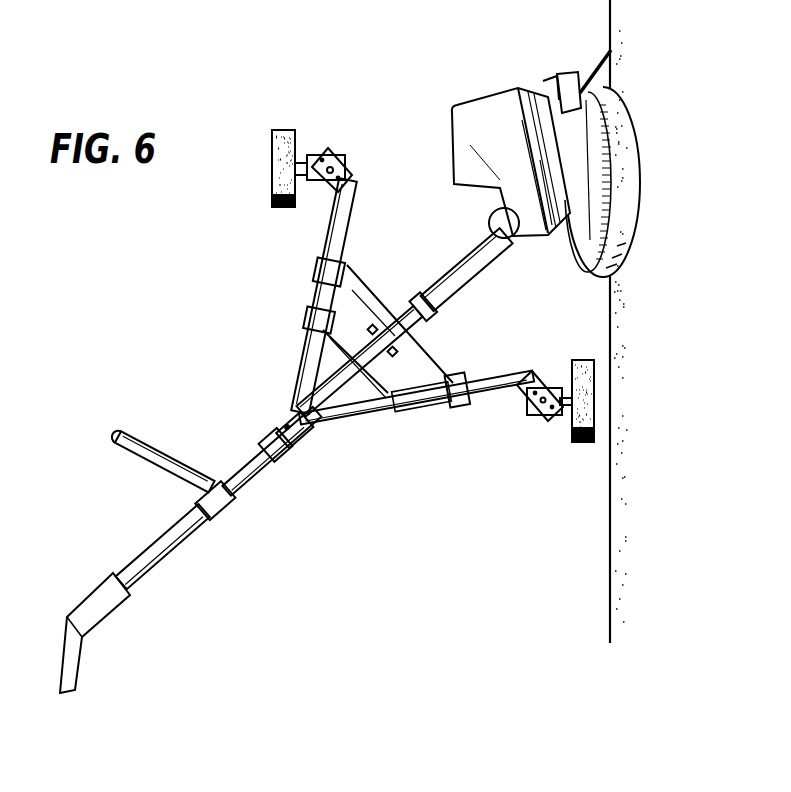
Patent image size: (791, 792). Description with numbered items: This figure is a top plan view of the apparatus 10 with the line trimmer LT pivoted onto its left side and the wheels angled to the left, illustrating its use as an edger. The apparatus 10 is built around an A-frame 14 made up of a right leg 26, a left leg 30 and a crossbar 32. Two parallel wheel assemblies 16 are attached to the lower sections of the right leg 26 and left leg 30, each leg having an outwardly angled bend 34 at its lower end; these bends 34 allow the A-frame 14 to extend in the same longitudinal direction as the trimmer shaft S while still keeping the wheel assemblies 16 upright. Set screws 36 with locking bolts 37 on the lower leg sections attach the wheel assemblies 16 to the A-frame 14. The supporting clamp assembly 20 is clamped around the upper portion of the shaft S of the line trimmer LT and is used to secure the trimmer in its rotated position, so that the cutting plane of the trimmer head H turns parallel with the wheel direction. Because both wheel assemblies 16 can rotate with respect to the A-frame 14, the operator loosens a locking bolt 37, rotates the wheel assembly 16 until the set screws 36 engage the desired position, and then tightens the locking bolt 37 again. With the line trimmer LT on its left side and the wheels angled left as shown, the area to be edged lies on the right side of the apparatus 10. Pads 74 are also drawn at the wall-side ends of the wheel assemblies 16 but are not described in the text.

The apparatus 10 is at (138, 274).
The A-frame 14 is at (427, 428).
The wheel assemblies 16 is at (339, 140).
The supporting clamp assembly 20 is at (289, 481).
The right leg 26 is at (467, 384).
The left leg 30 is at (298, 388).
The crossbar 32 is at (420, 356).
The outwardly angled bend 34 is at (358, 178).
The set screws 36 is at (547, 417).
The locking bolts 37 is at (527, 404).
The wall pad 74 is at (276, 130).
The trimmer head H is at (634, 190).
The shaft S is at (302, 428).
The line trimmer LT is at (112, 656).